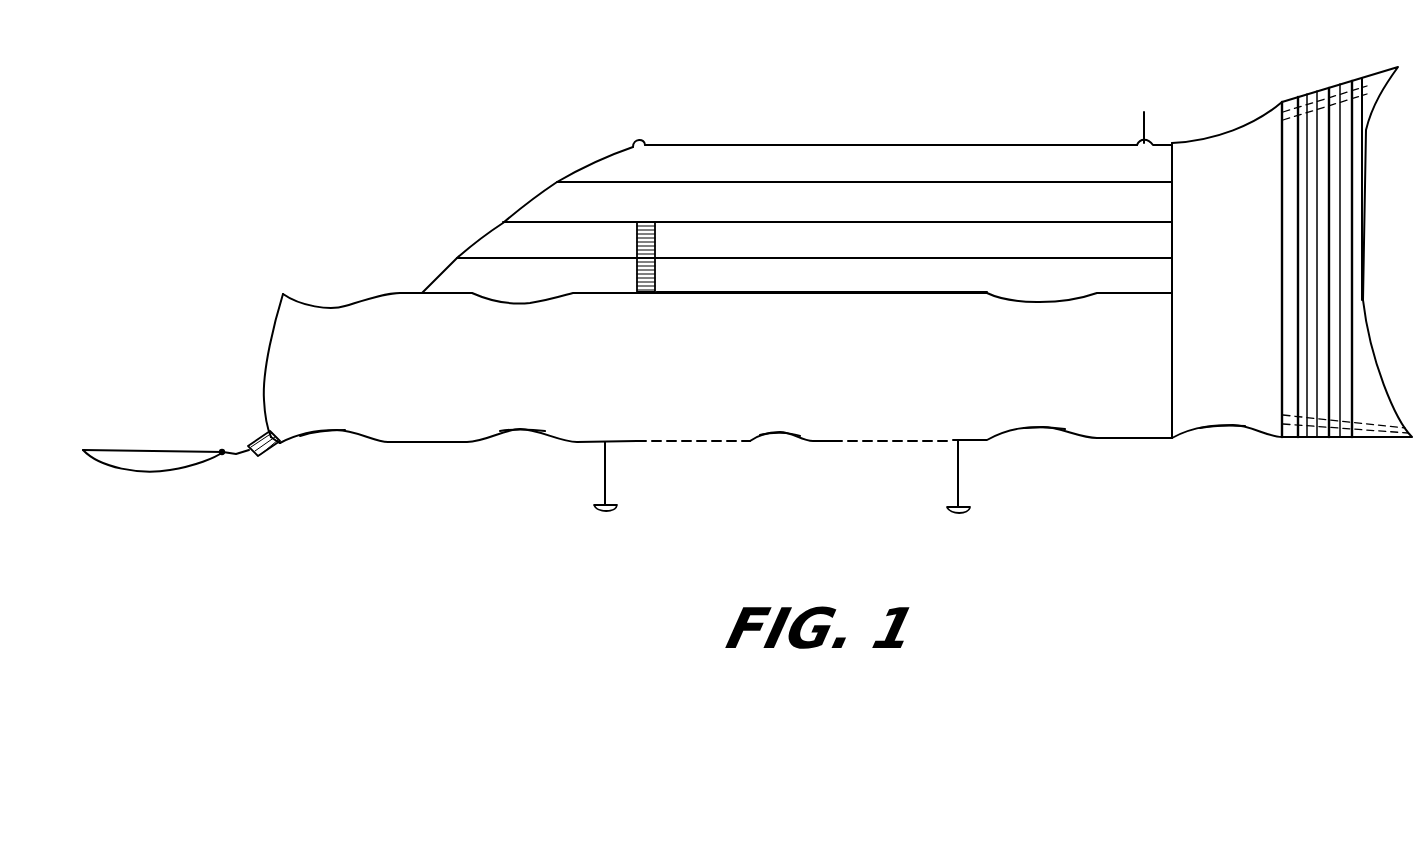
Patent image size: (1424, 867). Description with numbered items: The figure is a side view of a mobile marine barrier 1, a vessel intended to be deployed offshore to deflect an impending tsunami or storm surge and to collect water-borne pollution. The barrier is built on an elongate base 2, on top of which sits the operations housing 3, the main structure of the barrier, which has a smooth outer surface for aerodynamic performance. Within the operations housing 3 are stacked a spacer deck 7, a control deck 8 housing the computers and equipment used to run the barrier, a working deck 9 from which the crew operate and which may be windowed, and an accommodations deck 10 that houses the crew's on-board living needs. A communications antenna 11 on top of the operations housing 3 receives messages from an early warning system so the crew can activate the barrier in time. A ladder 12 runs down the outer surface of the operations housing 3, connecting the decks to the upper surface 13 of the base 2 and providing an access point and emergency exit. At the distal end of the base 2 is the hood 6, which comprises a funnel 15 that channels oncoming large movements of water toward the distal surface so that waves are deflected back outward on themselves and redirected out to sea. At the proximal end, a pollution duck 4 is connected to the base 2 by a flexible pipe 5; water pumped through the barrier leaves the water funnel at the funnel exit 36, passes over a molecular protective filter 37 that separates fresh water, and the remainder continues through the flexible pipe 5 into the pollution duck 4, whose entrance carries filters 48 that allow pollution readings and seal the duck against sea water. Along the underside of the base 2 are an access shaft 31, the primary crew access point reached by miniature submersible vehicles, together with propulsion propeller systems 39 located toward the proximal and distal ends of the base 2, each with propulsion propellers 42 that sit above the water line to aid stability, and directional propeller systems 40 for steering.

The mobile marine barrier 1 is at (297, 98).
The base 2 is at (781, 293).
The operations housing 3 is at (537, 197).
The pollution duck 4 is at (150, 472).
The flexible pipe 5 is at (232, 453).
The hood 6 is at (1250, 170).
The spacer deck 7 is at (822, 274).
The control deck 8 is at (814, 243).
The working deck 9 is at (837, 205).
The accommodations deck 10 is at (864, 168).
The communications antenna 11 is at (1137, 140).
The ladder 12 is at (637, 248).
The upper surface 13 is at (710, 292).
The funnel 15 is at (1333, 157).
The access shaft 31 is at (773, 462).
The funnel exit 36 is at (282, 445).
The molecular protective filter 37 is at (265, 430).
The propulsion propeller systems 39 is at (370, 450).
The directional propeller systems 40 is at (538, 450).
The propulsion propellers 42 is at (606, 514).
The filters 48 is at (221, 452).